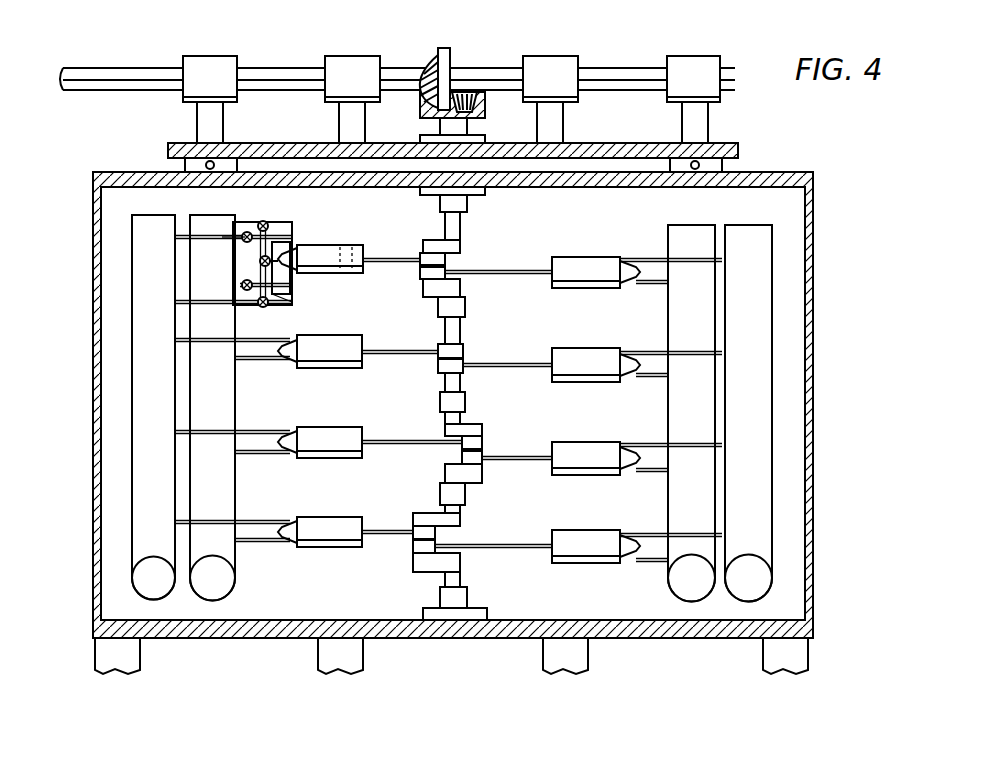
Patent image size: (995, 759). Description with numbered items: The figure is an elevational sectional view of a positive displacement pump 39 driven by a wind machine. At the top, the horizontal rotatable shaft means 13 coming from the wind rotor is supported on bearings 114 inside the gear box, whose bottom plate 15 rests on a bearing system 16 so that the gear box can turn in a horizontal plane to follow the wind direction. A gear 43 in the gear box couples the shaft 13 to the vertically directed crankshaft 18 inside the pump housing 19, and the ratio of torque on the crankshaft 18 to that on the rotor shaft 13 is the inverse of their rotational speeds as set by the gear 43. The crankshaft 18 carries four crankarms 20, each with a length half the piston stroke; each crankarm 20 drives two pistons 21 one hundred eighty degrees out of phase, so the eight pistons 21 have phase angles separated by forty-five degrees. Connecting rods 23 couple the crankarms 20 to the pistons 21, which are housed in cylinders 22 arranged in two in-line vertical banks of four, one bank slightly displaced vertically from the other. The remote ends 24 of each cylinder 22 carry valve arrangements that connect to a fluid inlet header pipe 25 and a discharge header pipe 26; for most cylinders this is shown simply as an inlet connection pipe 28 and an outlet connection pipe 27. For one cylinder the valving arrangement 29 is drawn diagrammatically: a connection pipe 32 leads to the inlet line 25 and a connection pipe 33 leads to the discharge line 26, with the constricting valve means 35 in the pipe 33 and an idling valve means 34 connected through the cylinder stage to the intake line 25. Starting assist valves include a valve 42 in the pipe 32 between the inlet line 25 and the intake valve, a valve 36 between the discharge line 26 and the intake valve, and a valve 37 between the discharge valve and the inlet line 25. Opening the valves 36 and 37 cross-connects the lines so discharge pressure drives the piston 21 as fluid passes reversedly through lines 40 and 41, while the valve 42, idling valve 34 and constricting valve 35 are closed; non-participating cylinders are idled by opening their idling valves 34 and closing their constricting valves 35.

The rotatable shaft means 13 is at (132, 72).
The bearings 114 is at (325, 55).
The gear 43 is at (456, 58).
The bottom plate 15 is at (738, 147).
The bearing system 16 is at (190, 165).
The pump housing 19 is at (813, 196).
The pump 39 is at (818, 243).
The crankshaft 18 is at (462, 240).
The crankarms 20 is at (438, 245).
The pistons 21 is at (345, 248).
The cylinders 22 is at (330, 369).
The connecting rods 23 is at (400, 266).
The remote ends 24 is at (286, 356).
The fluid inlet line 25 is at (225, 606).
The discharge fluid line 26 is at (135, 582).
The outlet connection pipe 27 is at (245, 430).
The inlet connection pipe 28 is at (270, 553).
The valving arrangement 29 is at (248, 262).
The connection pipe 32 is at (292, 280).
The connection pipe 33 is at (292, 238).
The idling valve means 34 is at (259, 264).
The constricting valve means 35 is at (250, 233).
The valve 36 is at (285, 300).
The valve 37 is at (268, 224).
The line 40 is at (264, 308).
The line 41 is at (244, 236).
The valve 42 is at (246, 290).